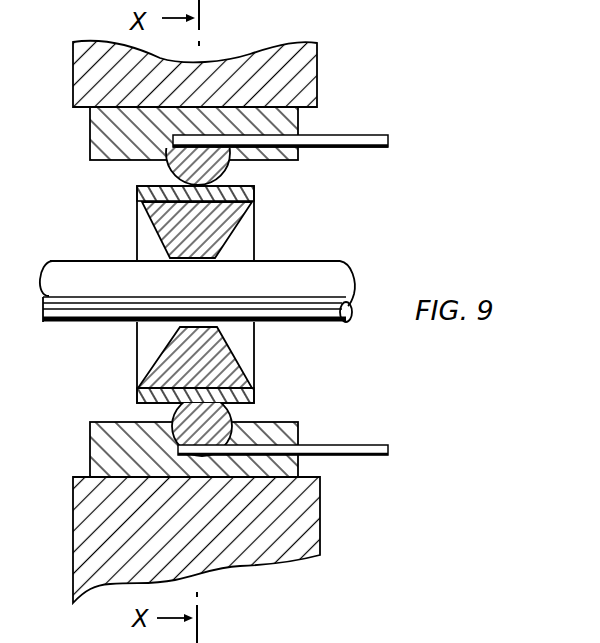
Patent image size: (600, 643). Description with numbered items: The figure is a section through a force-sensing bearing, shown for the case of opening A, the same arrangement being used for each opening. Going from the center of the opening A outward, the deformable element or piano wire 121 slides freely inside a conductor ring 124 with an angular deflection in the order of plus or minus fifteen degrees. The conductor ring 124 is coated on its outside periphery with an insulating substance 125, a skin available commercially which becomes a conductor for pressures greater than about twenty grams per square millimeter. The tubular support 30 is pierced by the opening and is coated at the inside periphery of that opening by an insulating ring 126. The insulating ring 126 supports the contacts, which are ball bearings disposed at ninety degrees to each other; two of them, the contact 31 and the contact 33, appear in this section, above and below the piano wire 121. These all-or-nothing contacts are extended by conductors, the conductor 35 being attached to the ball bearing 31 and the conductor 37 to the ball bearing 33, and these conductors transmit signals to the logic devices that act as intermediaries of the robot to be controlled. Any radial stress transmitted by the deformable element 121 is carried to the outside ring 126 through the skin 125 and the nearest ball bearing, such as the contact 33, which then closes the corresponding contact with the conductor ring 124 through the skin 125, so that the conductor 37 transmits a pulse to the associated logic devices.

The tubular support 30 is at (310, 533).
The contact 31 is at (223, 163).
The contact 33 is at (182, 415).
The conductor 35 is at (360, 137).
The conductor 37 is at (365, 456).
The deformable element 121 is at (290, 305).
The conductor ring 124 is at (165, 365).
The insulating substance 125 is at (257, 398).
The insulating ring 126 is at (287, 433).
The opening A is at (143, 243).